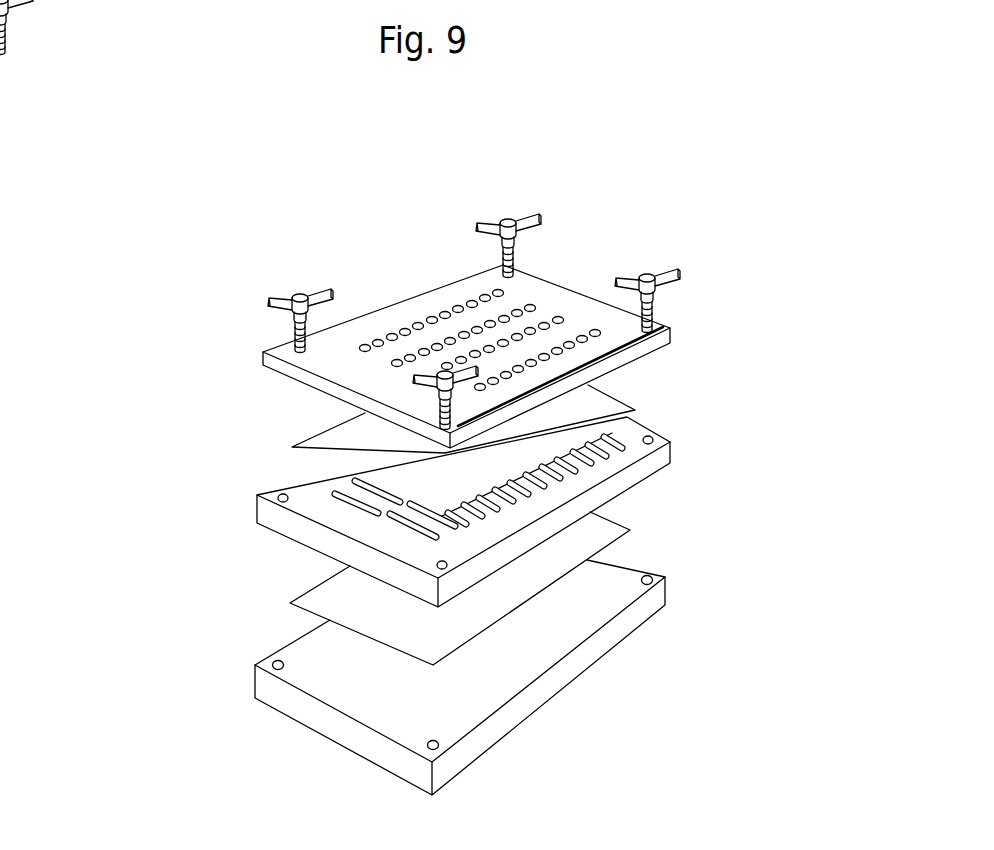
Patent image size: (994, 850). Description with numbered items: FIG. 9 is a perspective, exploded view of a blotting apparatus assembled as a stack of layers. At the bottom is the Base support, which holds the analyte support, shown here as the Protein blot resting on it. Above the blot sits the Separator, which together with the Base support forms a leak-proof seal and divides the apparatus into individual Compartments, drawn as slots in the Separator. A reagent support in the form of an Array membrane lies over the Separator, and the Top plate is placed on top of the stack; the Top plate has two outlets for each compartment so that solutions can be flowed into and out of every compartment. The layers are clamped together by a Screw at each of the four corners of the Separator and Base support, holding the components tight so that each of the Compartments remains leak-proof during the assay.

The top plate Top plate is at (231, 359).
The screw Screw is at (697, 282).
The reagent support Array membrane is at (651, 403).
The separator Separator is at (229, 510).
The compartments Compartments is at (392, 539).
The membrane analyte support Protein blot is at (654, 527).
The base support Base support is at (236, 680).